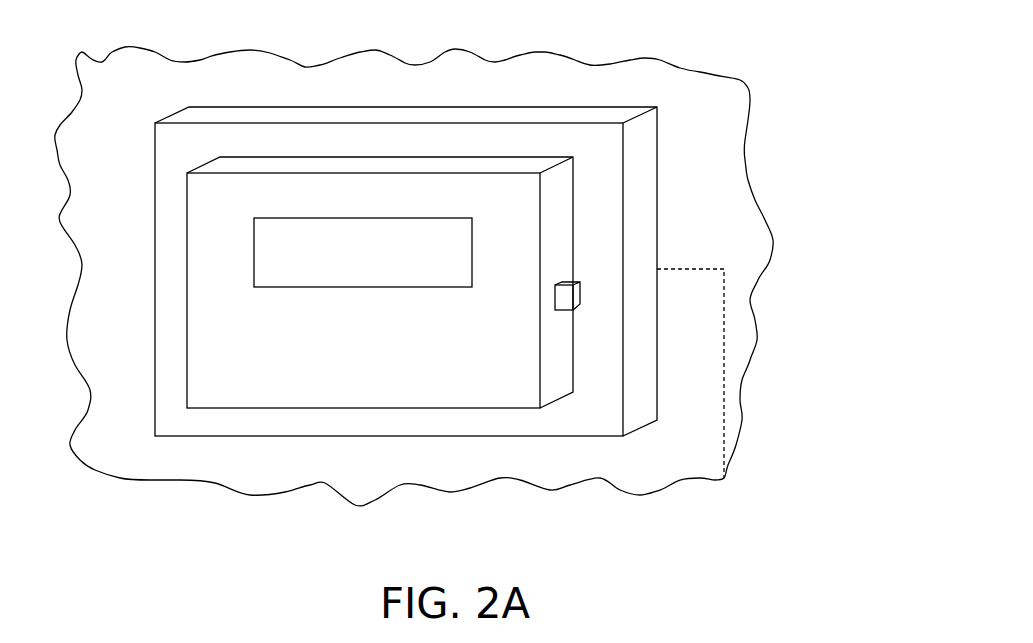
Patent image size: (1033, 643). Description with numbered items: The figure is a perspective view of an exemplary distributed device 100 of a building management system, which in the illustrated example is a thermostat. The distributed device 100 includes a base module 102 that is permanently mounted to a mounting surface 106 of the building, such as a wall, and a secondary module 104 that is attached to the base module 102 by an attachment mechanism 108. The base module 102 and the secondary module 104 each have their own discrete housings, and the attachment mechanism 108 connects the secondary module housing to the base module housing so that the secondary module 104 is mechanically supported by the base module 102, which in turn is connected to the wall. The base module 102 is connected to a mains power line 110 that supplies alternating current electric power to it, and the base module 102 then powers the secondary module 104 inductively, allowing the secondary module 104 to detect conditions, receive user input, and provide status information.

The distributed device 100 is at (712, 102).
The base module 102 is at (505, 436).
The secondary module 104 is at (328, 409).
The mounting surface 106 is at (537, 75).
The attachment mechanism 108 is at (573, 297).
The mains power line 110 is at (724, 410).